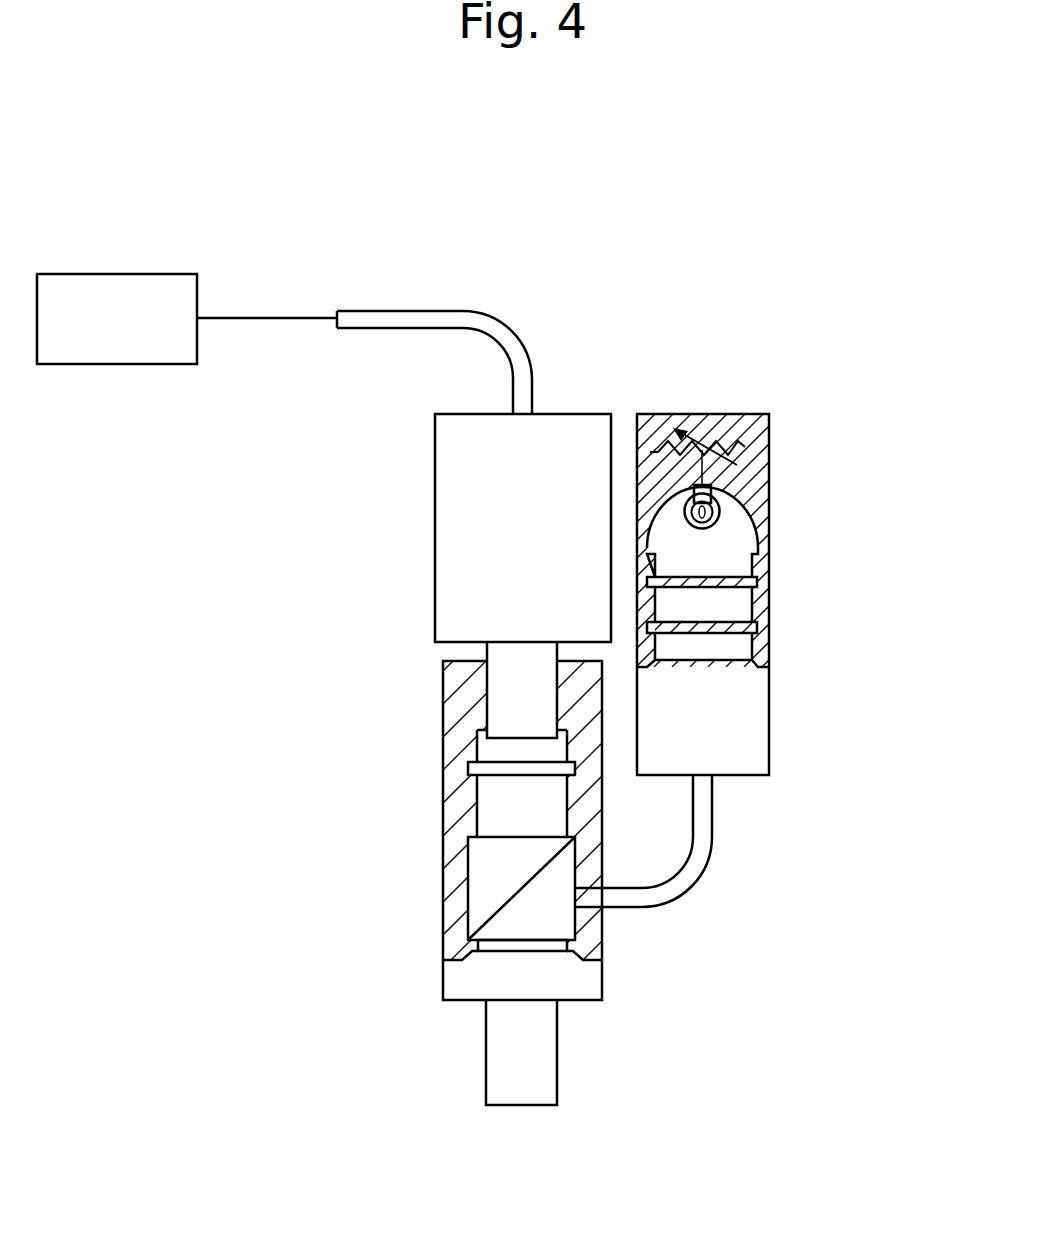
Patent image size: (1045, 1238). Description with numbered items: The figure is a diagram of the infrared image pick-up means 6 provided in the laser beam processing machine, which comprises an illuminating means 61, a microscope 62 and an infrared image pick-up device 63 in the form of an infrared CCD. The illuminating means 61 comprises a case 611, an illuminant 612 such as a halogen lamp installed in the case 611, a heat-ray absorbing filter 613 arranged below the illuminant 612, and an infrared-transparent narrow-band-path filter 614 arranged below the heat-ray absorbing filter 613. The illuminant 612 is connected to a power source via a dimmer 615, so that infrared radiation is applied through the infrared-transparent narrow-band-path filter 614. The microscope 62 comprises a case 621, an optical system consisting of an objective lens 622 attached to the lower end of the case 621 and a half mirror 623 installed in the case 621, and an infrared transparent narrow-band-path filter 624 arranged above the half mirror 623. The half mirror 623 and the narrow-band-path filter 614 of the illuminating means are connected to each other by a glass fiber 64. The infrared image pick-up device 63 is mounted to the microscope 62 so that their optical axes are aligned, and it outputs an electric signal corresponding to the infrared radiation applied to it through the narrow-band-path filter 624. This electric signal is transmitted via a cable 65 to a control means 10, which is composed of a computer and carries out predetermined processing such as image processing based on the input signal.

The control means 10 is at (90, 336).
The infrared image pick-up means 6 is at (630, 389).
The illuminating means 61 is at (699, 541).
The case 611 is at (730, 414).
The illuminant 612 is at (720, 508).
The heat-ray absorbing filter 613 is at (757, 583).
The infrared-transparent narrow-band-path filter 614 is at (757, 630).
The dimmer 615 is at (745, 443).
The microscope 62 is at (518, 873).
The case 621 is at (448, 830).
The objective lens 622 is at (558, 1058).
The half mirror 623 is at (560, 920).
The infrared transparent narrow-band-path filter 624 is at (473, 765).
The infrared image pick-up device 63 is at (435, 478).
The glass fiber 64 is at (702, 868).
The cable 65 is at (435, 310).